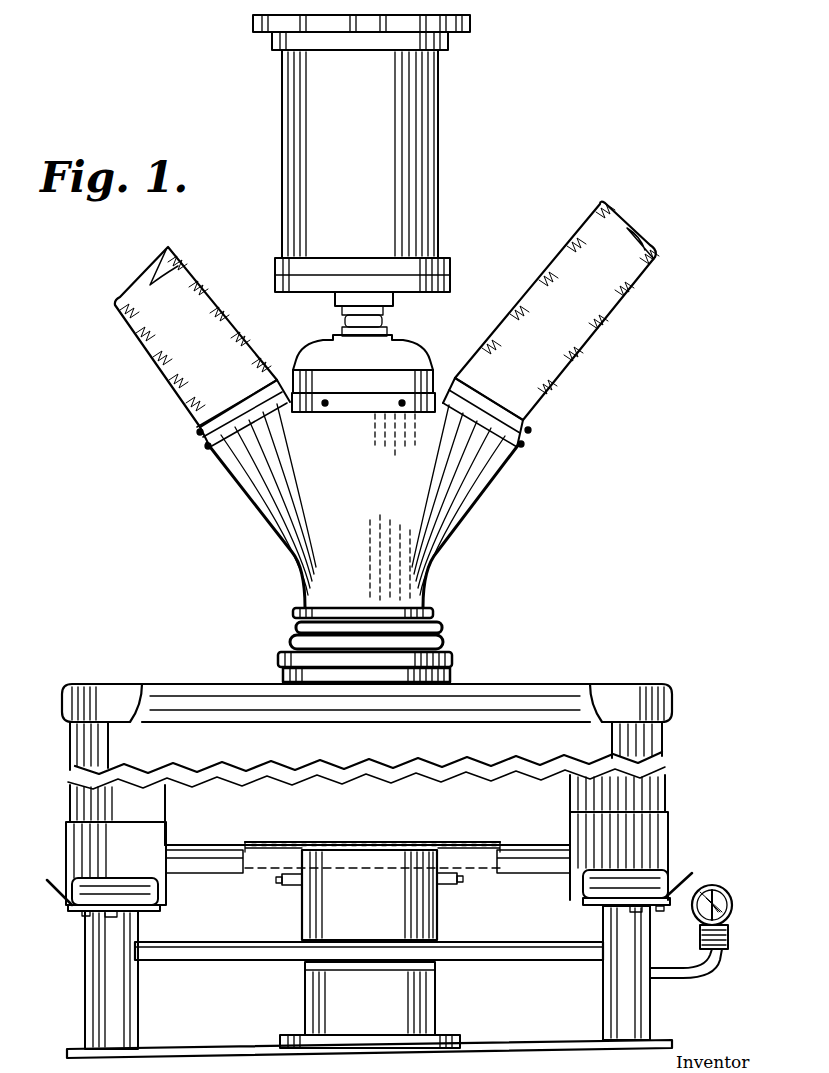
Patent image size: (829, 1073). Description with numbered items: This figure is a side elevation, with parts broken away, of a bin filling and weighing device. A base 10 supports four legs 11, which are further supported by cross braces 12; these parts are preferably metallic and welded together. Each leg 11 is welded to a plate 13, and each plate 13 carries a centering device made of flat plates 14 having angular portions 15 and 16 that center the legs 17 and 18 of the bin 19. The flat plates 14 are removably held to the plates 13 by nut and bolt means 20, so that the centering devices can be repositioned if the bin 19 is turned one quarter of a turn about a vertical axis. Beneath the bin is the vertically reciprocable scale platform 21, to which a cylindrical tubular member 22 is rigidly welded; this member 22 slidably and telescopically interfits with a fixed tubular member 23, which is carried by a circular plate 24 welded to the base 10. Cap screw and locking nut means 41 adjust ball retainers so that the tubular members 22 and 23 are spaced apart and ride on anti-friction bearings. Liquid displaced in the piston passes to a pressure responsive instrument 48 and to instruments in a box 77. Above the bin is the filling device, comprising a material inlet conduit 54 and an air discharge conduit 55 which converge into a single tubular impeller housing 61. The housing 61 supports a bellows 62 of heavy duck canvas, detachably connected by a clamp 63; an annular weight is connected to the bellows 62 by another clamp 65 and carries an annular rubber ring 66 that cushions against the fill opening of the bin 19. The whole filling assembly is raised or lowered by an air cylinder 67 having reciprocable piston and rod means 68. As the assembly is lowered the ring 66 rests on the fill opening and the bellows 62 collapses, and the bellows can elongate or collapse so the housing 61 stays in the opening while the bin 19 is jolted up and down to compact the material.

The base 10 is at (188, 1050).
The legs 11 is at (138, 1008).
The cross braces 12 is at (480, 944).
The plate 13 is at (152, 908).
The flat plates 14 is at (156, 890).
The angular portion 15 is at (662, 860).
The angular portion 16 is at (48, 882).
The leg of the bin 17 is at (662, 826).
The leg of the bin 18 is at (70, 850).
The bin 19 is at (548, 690).
The nut and bolt means 20 is at (112, 905).
The scale platform 21 is at (383, 842).
The cylindrical tubular member 22 is at (437, 914).
The fixed tubular member 23 is at (435, 1000).
The circular plate 24 is at (455, 1036).
The cap screw and locking nut means 41 is at (286, 890).
The pressure responsive instrument 48 is at (728, 918).
The material inlet conduit 54 is at (255, 478).
The air discharge conduit 55 is at (490, 472).
The impeller housing 61 is at (430, 595).
The bellows 62 is at (290, 645).
The clamp 63 is at (435, 614).
The clamp 65 is at (452, 660).
The annular rubber ring 66 is at (283, 678).
The air cylinder 67 is at (440, 157).
The piston and rod means 68 is at (378, 327).
The box 77 is at (722, 950).